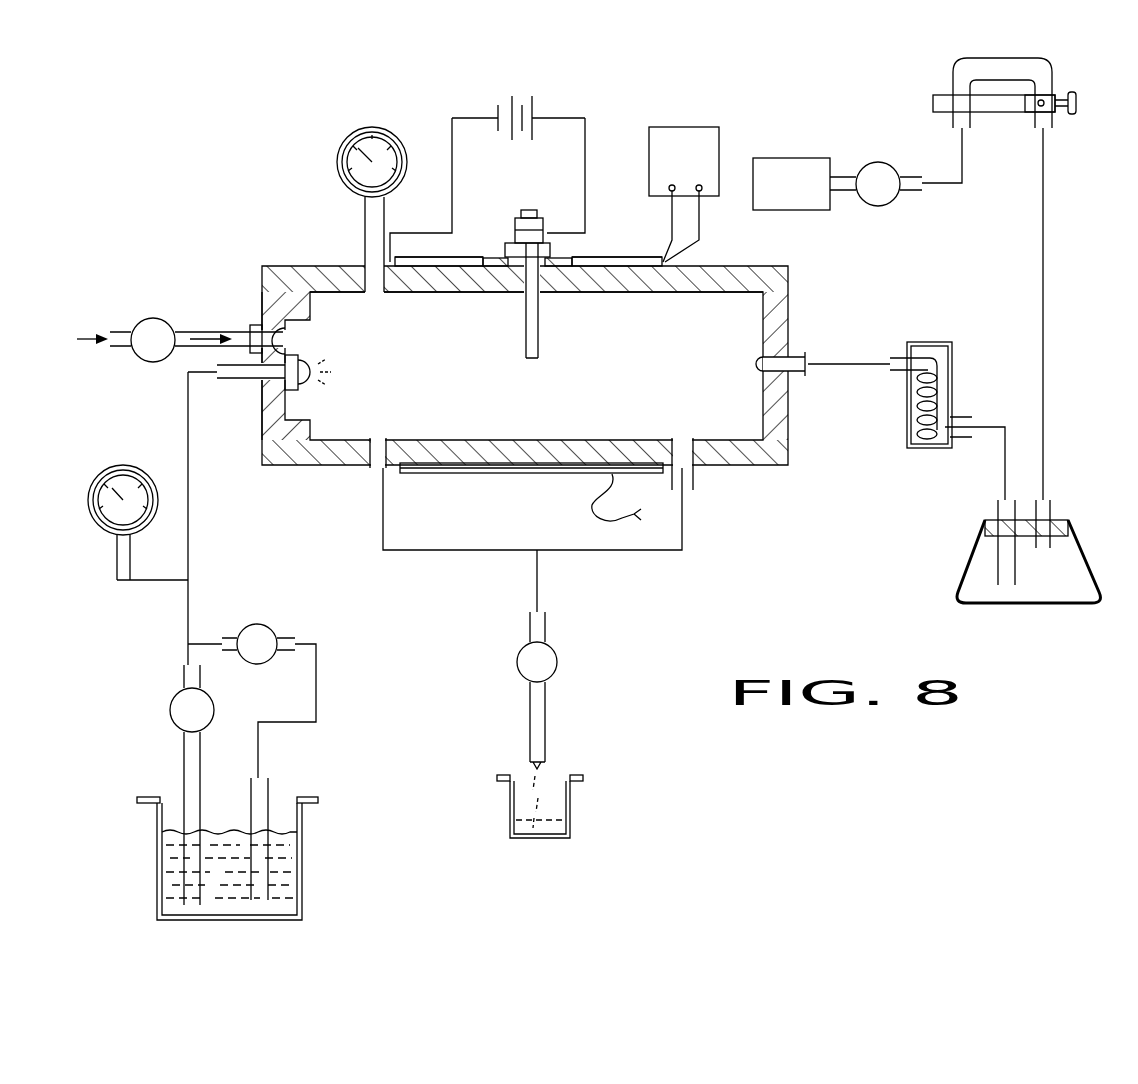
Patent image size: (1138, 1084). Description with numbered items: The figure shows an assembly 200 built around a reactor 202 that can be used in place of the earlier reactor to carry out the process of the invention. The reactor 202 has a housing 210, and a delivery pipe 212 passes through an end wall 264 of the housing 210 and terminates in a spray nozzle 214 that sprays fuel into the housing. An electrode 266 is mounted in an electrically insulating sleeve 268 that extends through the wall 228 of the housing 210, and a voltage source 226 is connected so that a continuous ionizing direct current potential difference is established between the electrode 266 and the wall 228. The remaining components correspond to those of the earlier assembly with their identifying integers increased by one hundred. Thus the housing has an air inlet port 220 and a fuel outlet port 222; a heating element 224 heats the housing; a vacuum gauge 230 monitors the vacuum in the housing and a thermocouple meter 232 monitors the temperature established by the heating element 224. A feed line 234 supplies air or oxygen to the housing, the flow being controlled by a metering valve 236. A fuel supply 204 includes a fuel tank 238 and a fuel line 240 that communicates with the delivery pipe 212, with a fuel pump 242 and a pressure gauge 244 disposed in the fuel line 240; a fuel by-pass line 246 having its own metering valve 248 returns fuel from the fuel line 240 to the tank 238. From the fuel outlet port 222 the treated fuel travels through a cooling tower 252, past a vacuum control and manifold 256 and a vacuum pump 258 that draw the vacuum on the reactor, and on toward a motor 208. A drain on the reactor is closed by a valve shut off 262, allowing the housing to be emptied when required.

The assembly 200 is at (178, 233).
The reactor 202 is at (768, 254).
The fuel supply 204 is at (152, 677).
The motor 208 is at (800, 162).
The housing 210 is at (330, 468).
The delivery pipe 212 is at (243, 378).
The spray nozzle 214 is at (312, 388).
The air inlet port 220 is at (300, 336).
The fuel outlet port 222 is at (762, 366).
The heating element 224 is at (490, 478).
The voltage source 226 is at (540, 108).
The wall 228 is at (697, 292).
The vacuum gauge 230 is at (364, 218).
The thermocouple meter 232 is at (673, 130).
The feed line 234 is at (118, 332).
The metering valve 236 is at (160, 358).
The fuel tank 238 is at (302, 870).
The fuel line 240 is at (187, 773).
The fuel pump 242 is at (175, 712).
The pressure gauge 244 is at (157, 583).
The fuel by-pass line 246 is at (318, 680).
The metering valve 248 is at (262, 625).
The cooling tower 252 is at (932, 340).
The vacuum control and manifold 256 is at (982, 65).
The vacuum pump 258 is at (893, 200).
The valve shut off 262 is at (557, 662).
The end wall 264 is at (262, 448).
The electrode 266 is at (528, 336).
The electrically insulating sleeve 268 is at (520, 283).